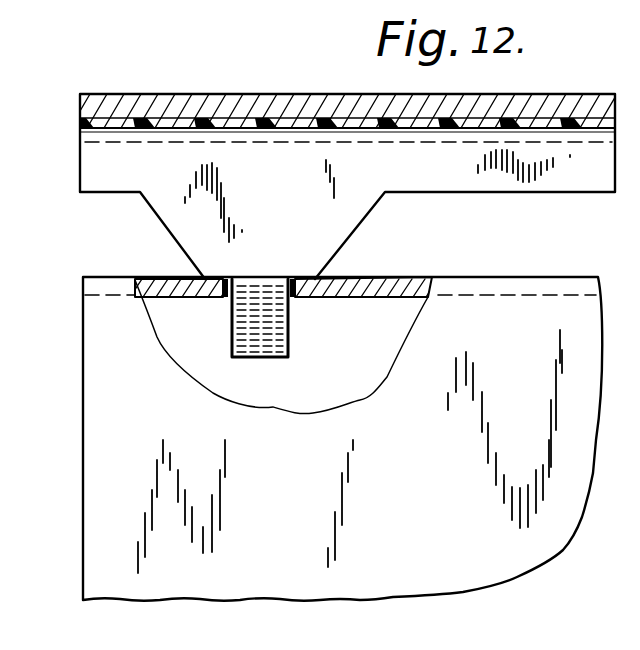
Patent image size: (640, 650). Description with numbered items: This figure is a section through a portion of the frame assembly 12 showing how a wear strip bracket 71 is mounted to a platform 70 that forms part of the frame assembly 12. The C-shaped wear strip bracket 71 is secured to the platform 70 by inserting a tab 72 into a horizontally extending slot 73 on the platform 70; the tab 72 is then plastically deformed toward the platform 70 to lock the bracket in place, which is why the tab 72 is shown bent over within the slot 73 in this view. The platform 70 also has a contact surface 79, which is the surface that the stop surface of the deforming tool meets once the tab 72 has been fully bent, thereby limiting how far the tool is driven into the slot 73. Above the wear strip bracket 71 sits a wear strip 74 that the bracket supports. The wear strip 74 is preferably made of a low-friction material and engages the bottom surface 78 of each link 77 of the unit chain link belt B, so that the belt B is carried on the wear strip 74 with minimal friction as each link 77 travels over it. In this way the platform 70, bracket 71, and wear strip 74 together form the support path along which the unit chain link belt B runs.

The frame assembly 12 is at (105, 409).
The platform 70 is at (95, 316).
The wear strip bracket 71 is at (102, 165).
The tab 72 is at (267, 330).
The slot 73 is at (306, 286).
The wear strip 74 is at (88, 123).
The link 77 is at (248, 100).
The bottom surface 78 is at (168, 136).
The contact surface 79 is at (207, 309).
The unit chain link belt B is at (153, 98).